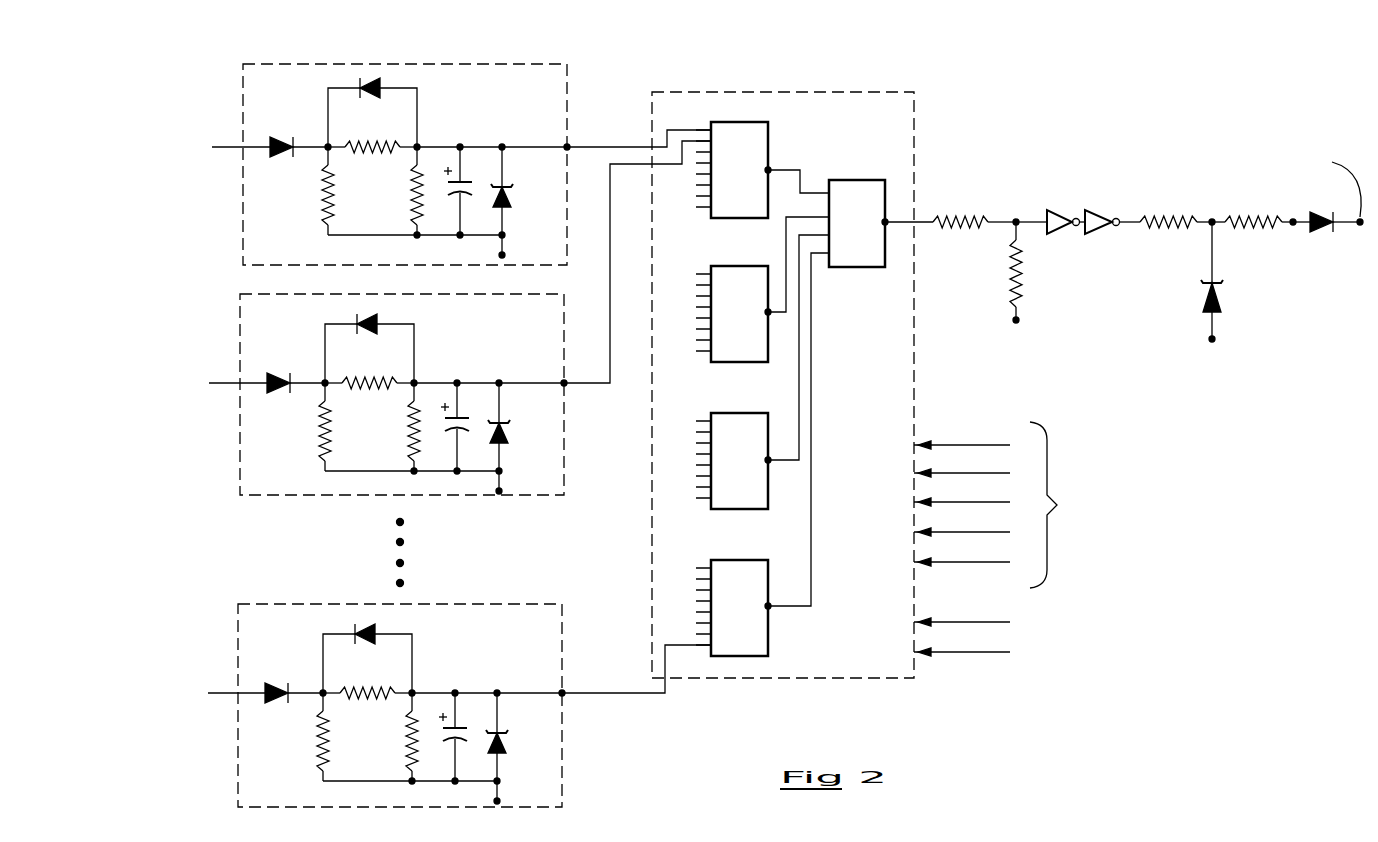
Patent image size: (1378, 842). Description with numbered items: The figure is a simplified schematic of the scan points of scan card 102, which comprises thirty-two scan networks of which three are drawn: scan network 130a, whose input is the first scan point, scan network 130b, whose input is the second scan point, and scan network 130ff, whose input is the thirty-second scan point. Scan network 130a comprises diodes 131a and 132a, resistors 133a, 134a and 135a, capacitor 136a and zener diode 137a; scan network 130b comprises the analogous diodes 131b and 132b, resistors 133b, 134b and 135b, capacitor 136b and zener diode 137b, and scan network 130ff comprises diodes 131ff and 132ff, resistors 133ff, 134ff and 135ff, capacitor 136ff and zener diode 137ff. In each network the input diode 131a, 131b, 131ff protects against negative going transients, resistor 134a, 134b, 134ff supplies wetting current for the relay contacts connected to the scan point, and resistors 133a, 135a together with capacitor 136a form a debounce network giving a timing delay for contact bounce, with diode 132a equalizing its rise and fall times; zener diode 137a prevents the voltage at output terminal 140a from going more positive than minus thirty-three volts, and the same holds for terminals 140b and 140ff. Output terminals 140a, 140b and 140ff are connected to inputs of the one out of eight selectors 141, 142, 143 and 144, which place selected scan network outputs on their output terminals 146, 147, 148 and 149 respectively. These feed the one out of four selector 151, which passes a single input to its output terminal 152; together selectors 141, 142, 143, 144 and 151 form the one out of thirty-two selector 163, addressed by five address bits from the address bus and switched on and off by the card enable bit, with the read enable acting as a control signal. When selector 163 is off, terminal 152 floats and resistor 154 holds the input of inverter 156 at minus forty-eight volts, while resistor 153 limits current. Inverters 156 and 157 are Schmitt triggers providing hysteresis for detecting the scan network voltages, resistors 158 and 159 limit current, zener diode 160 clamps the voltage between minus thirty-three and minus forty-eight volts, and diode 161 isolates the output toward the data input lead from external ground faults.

The scan card 102 is at (610, 567).
The scan network 130a is at (568, 86).
The scan network 130b is at (408, 399).
The scan network 130ff is at (405, 708).
The diode 131a is at (287, 136).
The diode 131b is at (269, 369).
The diode 131ff is at (268, 679).
The diode 132a is at (385, 82).
The diode 132b is at (384, 346).
The diode 132ff is at (383, 656).
The resistor 133a is at (374, 155).
The resistor 133b is at (369, 397).
The resistor 133ff is at (367, 707).
The resistor 134a is at (322, 201).
The resistor 134b is at (292, 427).
The resistor 134ff is at (289, 737).
The resistor 135a is at (417, 201).
The resistor 135b is at (386, 427).
The resistor 135ff is at (384, 737).
The capacitor 136a is at (472, 198).
The capacitor 136b is at (472, 427).
The capacitor 136ff is at (471, 737).
The zener diode 137a is at (508, 178).
The zener diode 137b is at (520, 438).
The zener diode 137ff is at (519, 748).
The output terminal 140a is at (570, 147).
The output terminal 140b is at (567, 383).
The output terminal 140ff is at (565, 693).
The 1 out of 8 selector 141 is at (740, 122).
The 1 out of 8 selector 142 is at (740, 266).
The 1 out of 8 selector 143 is at (740, 413).
The 1 out of 8 selector 144 is at (740, 560).
The output terminal 146 is at (771, 170).
The output terminal 147 is at (772, 316).
The output terminal 148 is at (772, 464).
The output terminal 149 is at (770, 612).
The 1 out of 4 selector 151 is at (858, 268).
The output terminal 152 is at (897, 234).
The resistor 153 is at (966, 208).
The resistor 154 is at (1010, 277).
The inverter 156 is at (1058, 208).
The inverter 157 is at (1108, 208).
The resistor 158 is at (1168, 208).
The resistor 159 is at (1243, 208).
The zener diode 160 is at (1192, 300).
The diode 161 is at (1310, 210).
The 1 out of 32 selector 163 is at (800, 681).